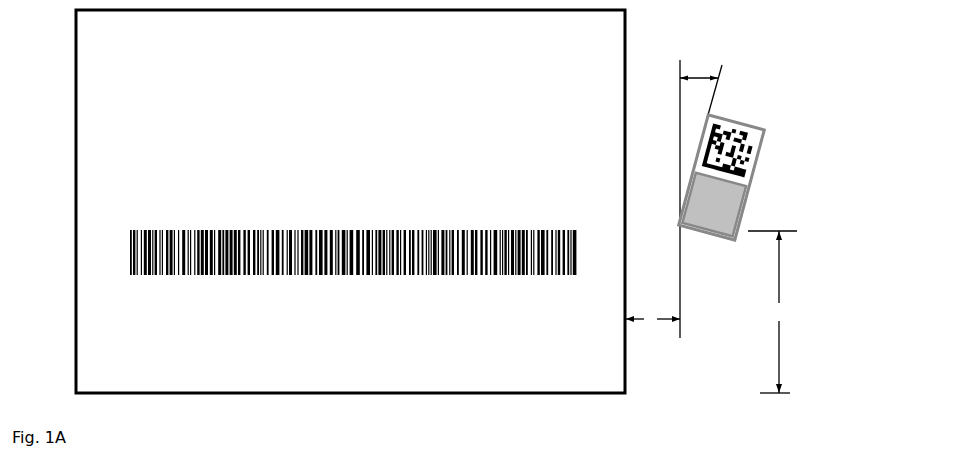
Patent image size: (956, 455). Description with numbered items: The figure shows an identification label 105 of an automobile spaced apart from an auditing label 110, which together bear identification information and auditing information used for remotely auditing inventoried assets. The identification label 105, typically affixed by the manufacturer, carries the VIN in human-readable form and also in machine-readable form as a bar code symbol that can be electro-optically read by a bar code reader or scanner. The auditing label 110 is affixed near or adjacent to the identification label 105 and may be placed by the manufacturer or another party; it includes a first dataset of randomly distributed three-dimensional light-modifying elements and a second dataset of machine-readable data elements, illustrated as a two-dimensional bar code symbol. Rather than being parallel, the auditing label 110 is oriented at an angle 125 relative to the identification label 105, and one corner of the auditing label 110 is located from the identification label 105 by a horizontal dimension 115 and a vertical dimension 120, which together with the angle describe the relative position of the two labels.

The identification label 105 is at (85, 39).
The auditing label 110 is at (755, 177).
The horizontal dimension (X) 115 is at (652, 330).
The vertical dimension (Y) 120 is at (788, 313).
The angle (α) 125 is at (719, 63).